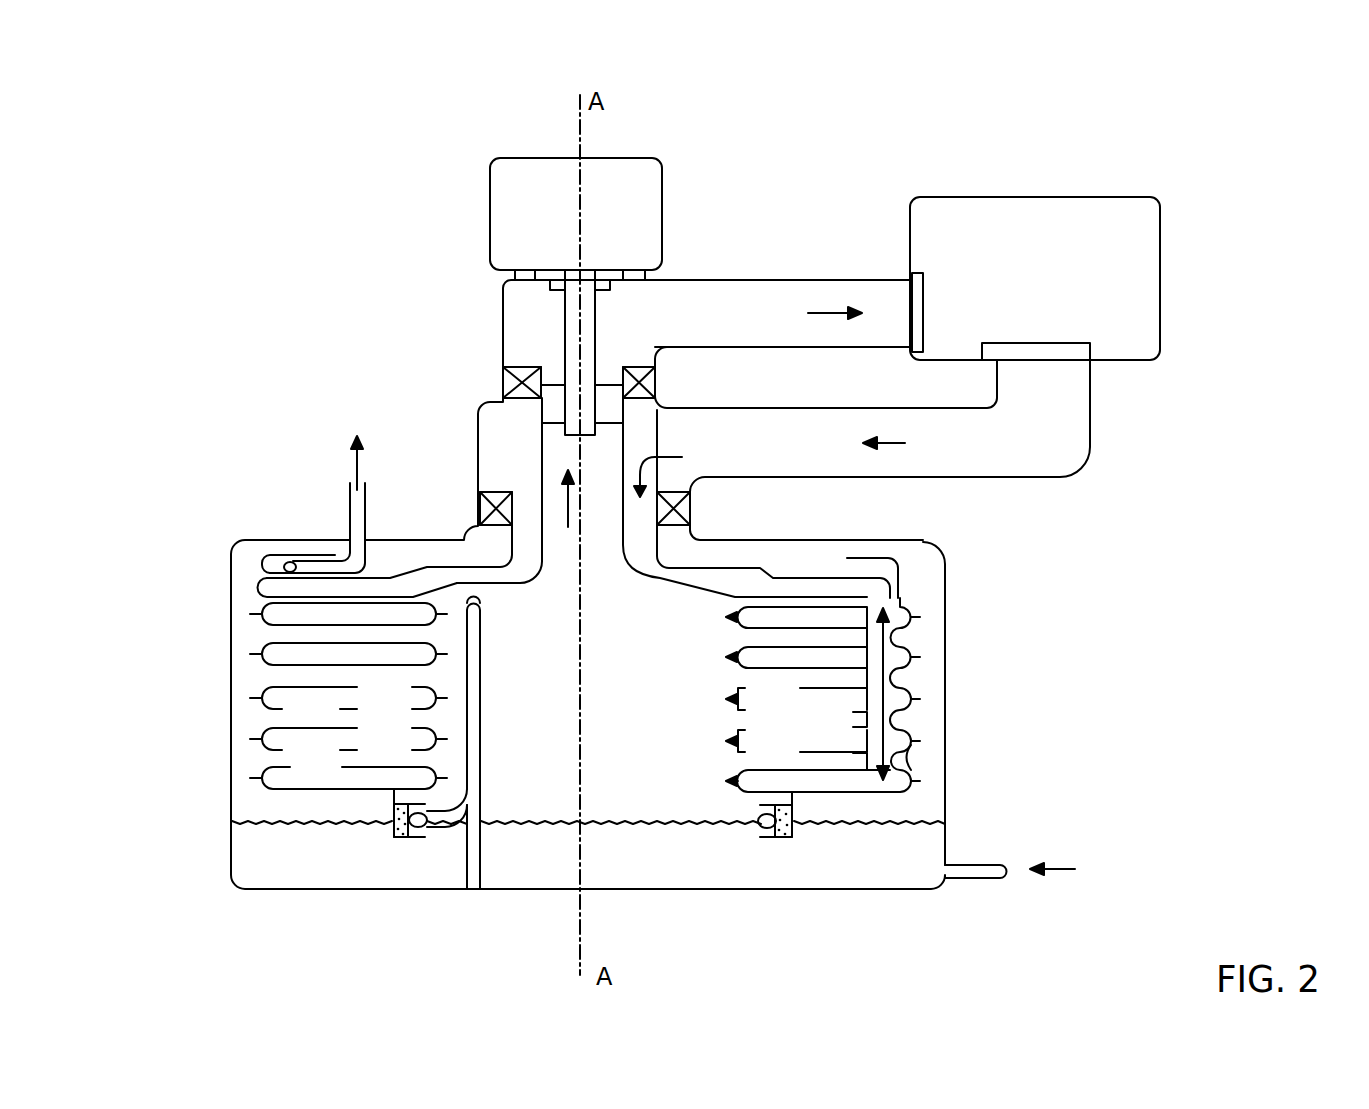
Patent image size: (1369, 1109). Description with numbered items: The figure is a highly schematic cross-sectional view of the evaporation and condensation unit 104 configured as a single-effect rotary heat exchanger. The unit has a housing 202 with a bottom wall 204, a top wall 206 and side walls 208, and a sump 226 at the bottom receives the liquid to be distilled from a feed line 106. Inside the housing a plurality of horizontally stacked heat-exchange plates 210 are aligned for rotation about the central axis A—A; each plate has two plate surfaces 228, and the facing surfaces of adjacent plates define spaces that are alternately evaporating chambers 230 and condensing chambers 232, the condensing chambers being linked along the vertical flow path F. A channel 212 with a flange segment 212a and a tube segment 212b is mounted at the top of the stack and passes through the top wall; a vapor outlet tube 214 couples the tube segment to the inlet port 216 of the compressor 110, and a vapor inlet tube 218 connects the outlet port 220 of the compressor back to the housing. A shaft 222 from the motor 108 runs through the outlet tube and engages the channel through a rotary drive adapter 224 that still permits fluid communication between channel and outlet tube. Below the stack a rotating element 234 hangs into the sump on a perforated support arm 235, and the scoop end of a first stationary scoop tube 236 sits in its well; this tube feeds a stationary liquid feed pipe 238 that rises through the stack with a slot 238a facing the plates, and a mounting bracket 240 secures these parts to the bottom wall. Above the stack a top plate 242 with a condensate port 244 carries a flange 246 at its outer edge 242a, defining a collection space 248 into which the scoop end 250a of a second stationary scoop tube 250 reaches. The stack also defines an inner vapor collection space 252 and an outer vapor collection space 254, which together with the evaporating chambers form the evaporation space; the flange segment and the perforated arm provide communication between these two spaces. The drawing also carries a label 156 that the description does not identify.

The evaporation and condensation unit 104 is at (994, 556).
The feed line 106 is at (967, 865).
The motor 108 is at (663, 183).
The compressor 110 is at (1162, 258).
The evaporator plate 156 is at (262, 614).
The housing 202 is at (231, 543).
The bottom wall 204 is at (747, 892).
The top wall 206 is at (766, 540).
The side walls 208 is at (231, 766).
The heat-exchange plates 210 is at (262, 645).
The channel 212 is at (625, 431).
The flange segment 212a is at (730, 589).
The tube segment 212b is at (542, 428).
The vapor outlet tube 214 is at (503, 321).
The inlet port 216 is at (923, 279).
The vapor inlet tube 218 is at (1072, 452).
The outlet port 220 is at (1080, 343).
The shaft 222 is at (596, 300).
The rotary drive adapter 224 is at (606, 380).
The sump 226 is at (679, 871).
The plate surfaces 228 is at (763, 667).
The evaporating chambers 230 is at (333, 731).
The condensing chambers 232 is at (404, 710).
The rotating element 234 is at (396, 835).
The perforated support arm 235 is at (393, 805).
The first stationary scoop tube 236 is at (446, 829).
The stationary liquid feed pipe 238 is at (482, 712).
The slot 238a is at (460, 658).
The mounting bracket 240 is at (482, 856).
The top plate 242 is at (423, 567).
The outer edge 242a is at (262, 586).
The condensate port 244 is at (925, 574).
The flange 246 is at (323, 553).
The collection space 248 is at (275, 556).
The second stationary scoop tube 250 is at (367, 492).
The scoop end 250a is at (292, 561).
The inner vapor collection space 252 is at (604, 768).
The outer vapor collection space 254 is at (274, 690).